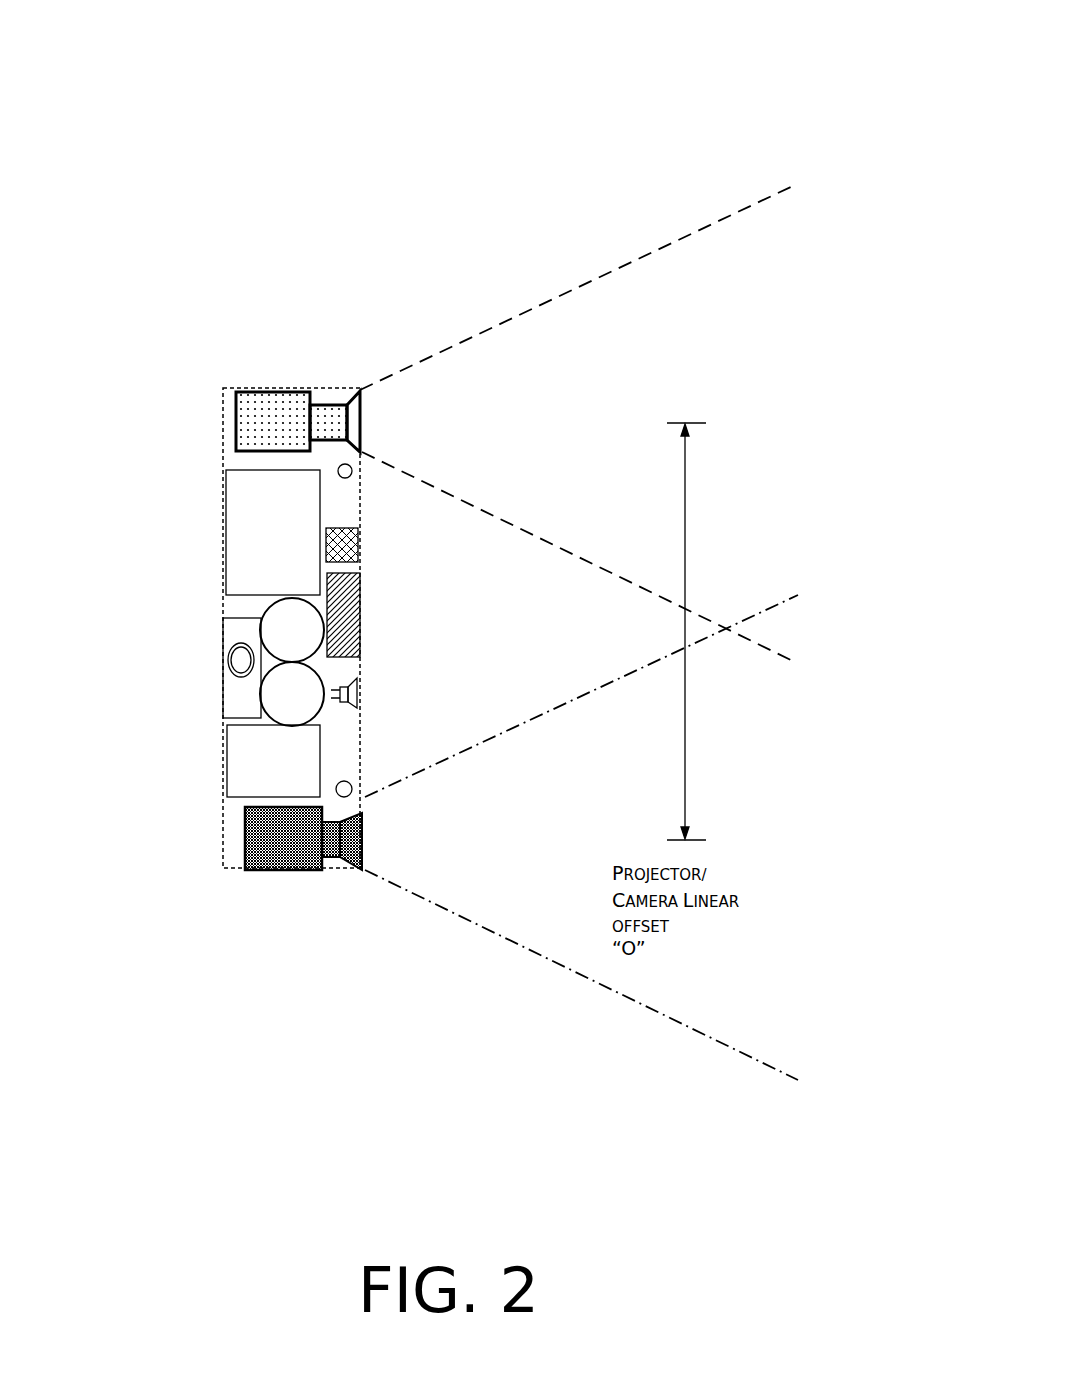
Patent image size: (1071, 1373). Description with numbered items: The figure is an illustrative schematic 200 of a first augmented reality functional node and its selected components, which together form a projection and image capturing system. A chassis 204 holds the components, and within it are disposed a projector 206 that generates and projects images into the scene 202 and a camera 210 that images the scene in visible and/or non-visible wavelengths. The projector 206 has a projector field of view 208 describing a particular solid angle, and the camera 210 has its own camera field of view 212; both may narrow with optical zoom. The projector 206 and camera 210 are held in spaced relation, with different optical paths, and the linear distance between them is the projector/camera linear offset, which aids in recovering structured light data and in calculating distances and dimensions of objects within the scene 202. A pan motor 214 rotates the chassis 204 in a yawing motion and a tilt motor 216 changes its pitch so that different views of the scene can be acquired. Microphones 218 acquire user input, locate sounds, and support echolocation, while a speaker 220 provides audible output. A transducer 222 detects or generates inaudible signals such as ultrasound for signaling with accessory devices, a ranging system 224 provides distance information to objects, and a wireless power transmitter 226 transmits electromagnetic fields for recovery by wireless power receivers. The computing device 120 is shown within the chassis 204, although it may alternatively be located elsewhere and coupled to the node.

The illustrative schematic 200 is at (754, 32).
The chassis 204 is at (298, 387).
The projector 206 is at (275, 425).
The projector field of view 208 is at (576, 278).
The computing device 120 is at (280, 533).
The microphones 218 is at (357, 462).
The transducer 222 is at (358, 530).
The pan motor 214 is at (267, 612).
The tilt motor 216 is at (262, 714).
The ranging system 224 is at (362, 610).
The wireless power transmitter 226 is at (232, 663).
The speaker 220 is at (360, 692).
The camera 210 is at (264, 846).
The camera field of view 212 is at (524, 960).
The scene 202 is at (832, 632).